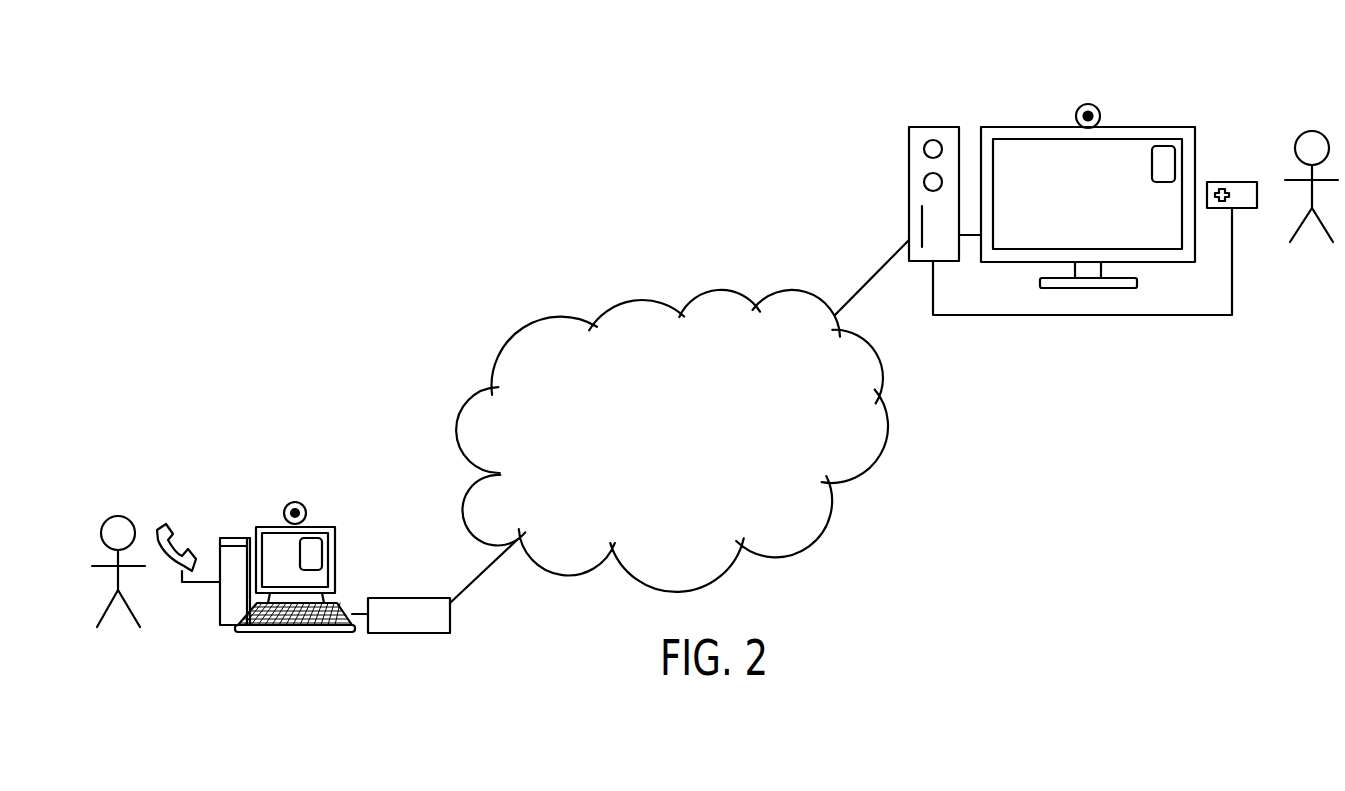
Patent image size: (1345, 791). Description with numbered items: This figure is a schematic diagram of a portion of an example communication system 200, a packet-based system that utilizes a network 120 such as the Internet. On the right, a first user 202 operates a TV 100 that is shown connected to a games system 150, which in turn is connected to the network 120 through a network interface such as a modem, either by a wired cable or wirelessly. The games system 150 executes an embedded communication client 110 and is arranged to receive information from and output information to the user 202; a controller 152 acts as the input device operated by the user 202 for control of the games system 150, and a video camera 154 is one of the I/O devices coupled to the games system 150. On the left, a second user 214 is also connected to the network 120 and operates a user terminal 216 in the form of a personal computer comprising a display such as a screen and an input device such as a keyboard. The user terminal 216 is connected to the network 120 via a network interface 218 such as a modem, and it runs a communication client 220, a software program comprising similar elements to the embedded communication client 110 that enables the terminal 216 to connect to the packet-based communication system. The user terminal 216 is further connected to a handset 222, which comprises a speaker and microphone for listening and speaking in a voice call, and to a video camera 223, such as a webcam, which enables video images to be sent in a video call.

The TV set 100 is at (1011, 127).
The embedded communication client 110 is at (1165, 146).
The network 120 is at (889, 440).
The games system 150 is at (933, 127).
The controller 152 is at (1232, 182).
The video camera 154 is at (1088, 104).
The communication system 200 is at (448, 253).
The first user 202 is at (1312, 131).
The second user 214 is at (118, 516).
The user terminal 216 is at (263, 526).
The network interface 218 is at (408, 598).
The communication client 220 is at (322, 547).
The handset 222 is at (163, 526).
The video camera 223 is at (298, 502).